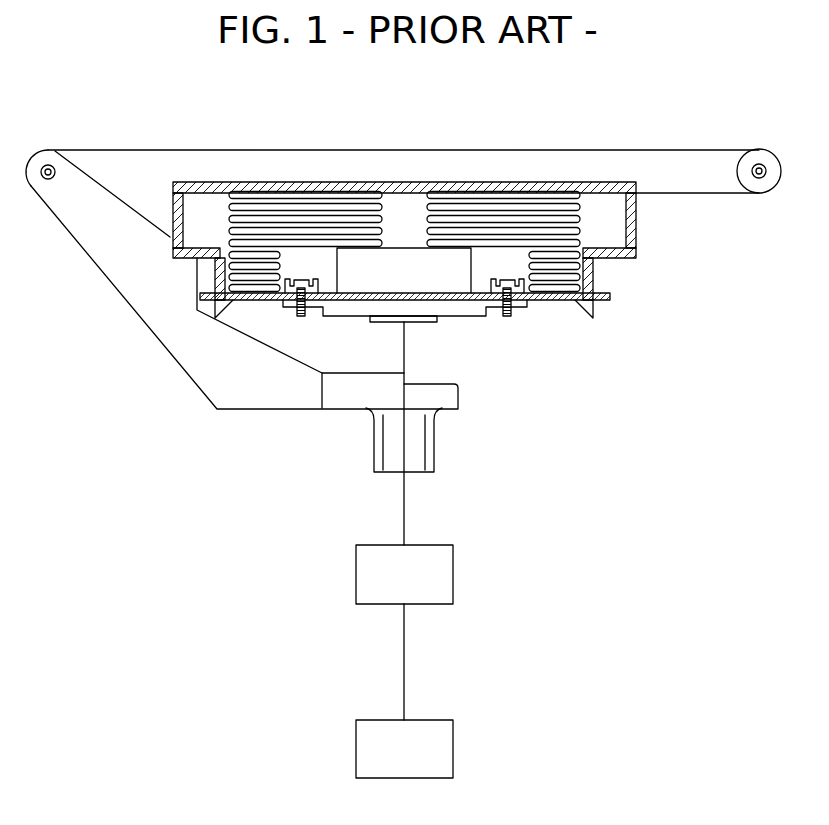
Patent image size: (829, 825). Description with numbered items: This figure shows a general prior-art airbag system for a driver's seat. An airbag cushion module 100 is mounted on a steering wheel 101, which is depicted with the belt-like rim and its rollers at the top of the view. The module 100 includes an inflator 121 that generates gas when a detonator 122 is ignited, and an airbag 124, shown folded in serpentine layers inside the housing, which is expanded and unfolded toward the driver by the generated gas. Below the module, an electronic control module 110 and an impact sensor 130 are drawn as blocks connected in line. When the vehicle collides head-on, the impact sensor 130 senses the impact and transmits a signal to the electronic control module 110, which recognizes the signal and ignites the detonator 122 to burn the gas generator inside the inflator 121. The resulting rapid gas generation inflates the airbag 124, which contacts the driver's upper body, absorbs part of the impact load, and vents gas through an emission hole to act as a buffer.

The airbag cushion module 100 is at (272, 308).
The steering wheel 101 is at (680, 148).
The electronic control module 110 is at (453, 572).
The inflator 121 is at (372, 277).
The detonator 122 is at (388, 322).
The airbag 124 is at (400, 207).
The impact sensor 130 is at (453, 748).